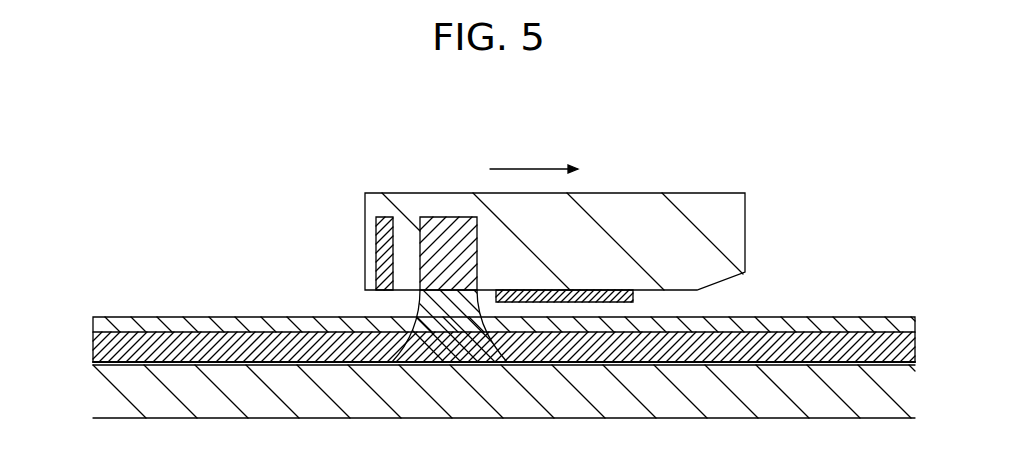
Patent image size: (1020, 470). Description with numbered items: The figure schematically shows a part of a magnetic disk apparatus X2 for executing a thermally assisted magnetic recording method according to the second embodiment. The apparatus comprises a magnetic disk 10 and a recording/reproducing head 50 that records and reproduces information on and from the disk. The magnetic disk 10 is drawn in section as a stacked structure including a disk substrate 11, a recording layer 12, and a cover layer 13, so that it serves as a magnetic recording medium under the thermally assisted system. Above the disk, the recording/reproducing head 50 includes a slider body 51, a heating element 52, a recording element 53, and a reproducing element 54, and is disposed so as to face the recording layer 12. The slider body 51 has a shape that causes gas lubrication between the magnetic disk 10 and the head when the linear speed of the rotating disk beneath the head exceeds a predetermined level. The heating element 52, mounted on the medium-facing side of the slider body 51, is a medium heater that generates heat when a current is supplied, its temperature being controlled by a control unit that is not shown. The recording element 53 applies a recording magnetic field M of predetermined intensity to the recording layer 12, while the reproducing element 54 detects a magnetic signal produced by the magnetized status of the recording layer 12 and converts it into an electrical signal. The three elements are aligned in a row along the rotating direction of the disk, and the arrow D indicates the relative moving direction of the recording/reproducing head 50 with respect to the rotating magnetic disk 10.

The magnetic disk 10 is at (872, 302).
The disk substrate 11 is at (895, 385).
The recording layer 12 is at (898, 345).
The cover layer 13 is at (898, 327).
The recording/reproducing head 50 is at (352, 184).
The slider body 51 is at (727, 209).
The heating element 52 is at (613, 290).
The recording element 53 is at (460, 237).
The reproducing element 54 is at (386, 250).
The recording magnetic field M is at (420, 300).
The arrow D is at (534, 153).
The magnetic disk apparatus X2 is at (153, 253).